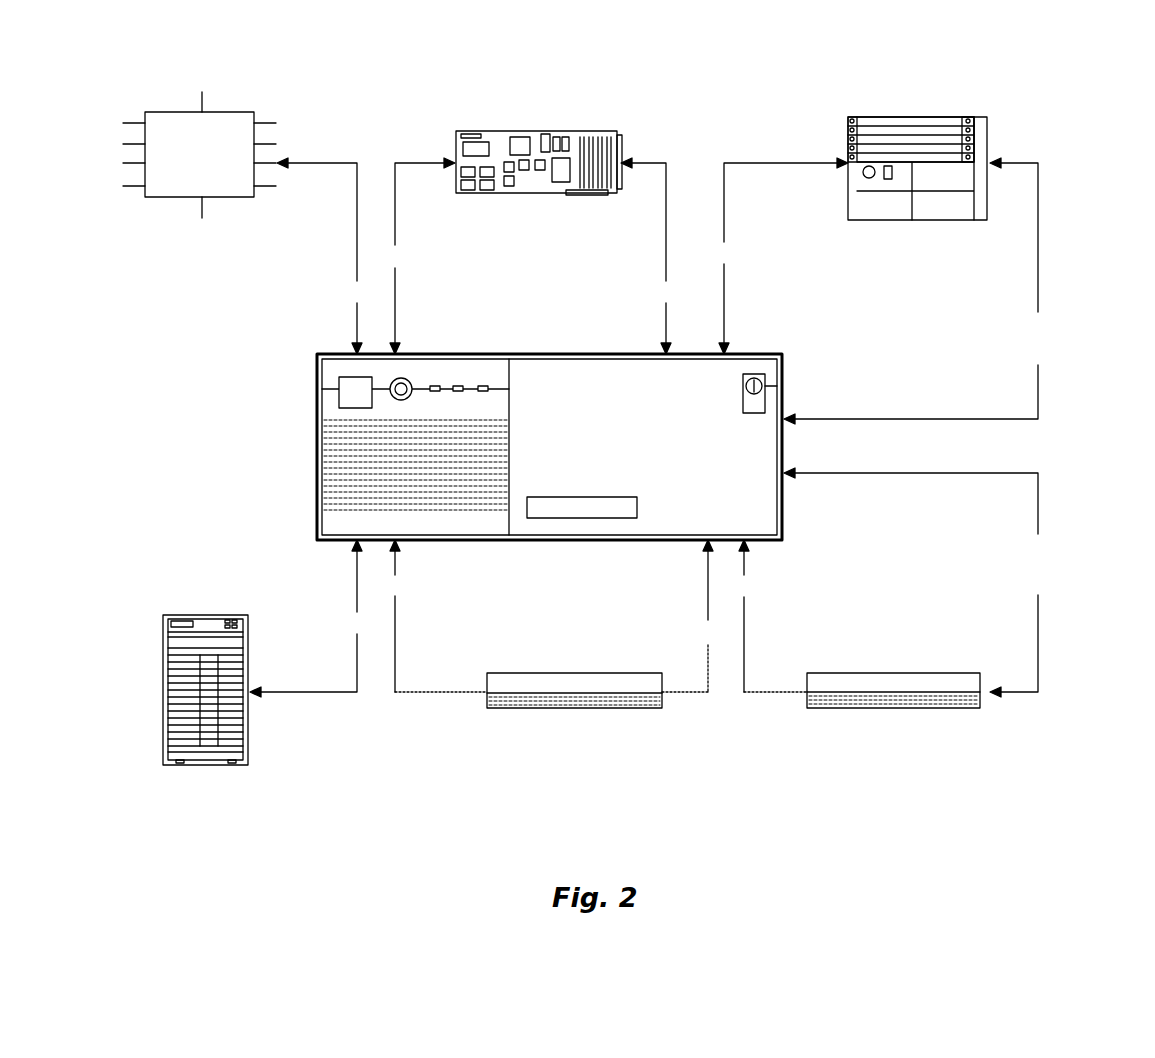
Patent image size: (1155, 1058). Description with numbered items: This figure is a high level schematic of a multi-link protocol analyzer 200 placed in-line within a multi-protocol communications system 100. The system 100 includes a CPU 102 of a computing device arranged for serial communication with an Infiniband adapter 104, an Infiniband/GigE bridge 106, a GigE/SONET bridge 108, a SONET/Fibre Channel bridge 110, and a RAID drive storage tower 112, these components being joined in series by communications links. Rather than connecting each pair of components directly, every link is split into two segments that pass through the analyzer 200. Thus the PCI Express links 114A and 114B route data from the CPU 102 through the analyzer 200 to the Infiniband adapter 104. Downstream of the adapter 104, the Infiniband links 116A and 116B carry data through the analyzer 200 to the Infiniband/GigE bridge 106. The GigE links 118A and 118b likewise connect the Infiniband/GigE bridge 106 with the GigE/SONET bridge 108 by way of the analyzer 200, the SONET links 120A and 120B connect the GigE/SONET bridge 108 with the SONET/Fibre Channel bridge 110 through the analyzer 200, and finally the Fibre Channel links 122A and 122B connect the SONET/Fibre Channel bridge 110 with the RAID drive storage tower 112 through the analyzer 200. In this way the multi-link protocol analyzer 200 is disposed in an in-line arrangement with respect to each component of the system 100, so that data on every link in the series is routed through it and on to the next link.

The communications system 100 is at (783, 98).
The CPU 102 is at (180, 198).
The Infiniband adapter 104 is at (636, 148).
The Infiniband/GigE bridge 106 is at (990, 144).
The GigE/SONET bridge 108 is at (960, 710).
The SONET/Fibre Channel bridge 110 is at (635, 710).
The RAID drive storage tower 112 is at (247, 738).
The PCI Express link 114A is at (357, 231).
The PCI Express link 114B is at (395, 318).
The Infiniband link 116A is at (666, 229).
The Infiniband link 116B is at (724, 317).
The GigE link 118A is at (1038, 385).
The GigE link 118b is at (1038, 495).
The SONET link 120A is at (744, 639).
The SONET link 120B is at (708, 578).
The Fibre Channel link 122A is at (395, 637).
The Fibre Channel link 122B is at (357, 577).
The multi-link protocol analyzer 200 is at (288, 467).